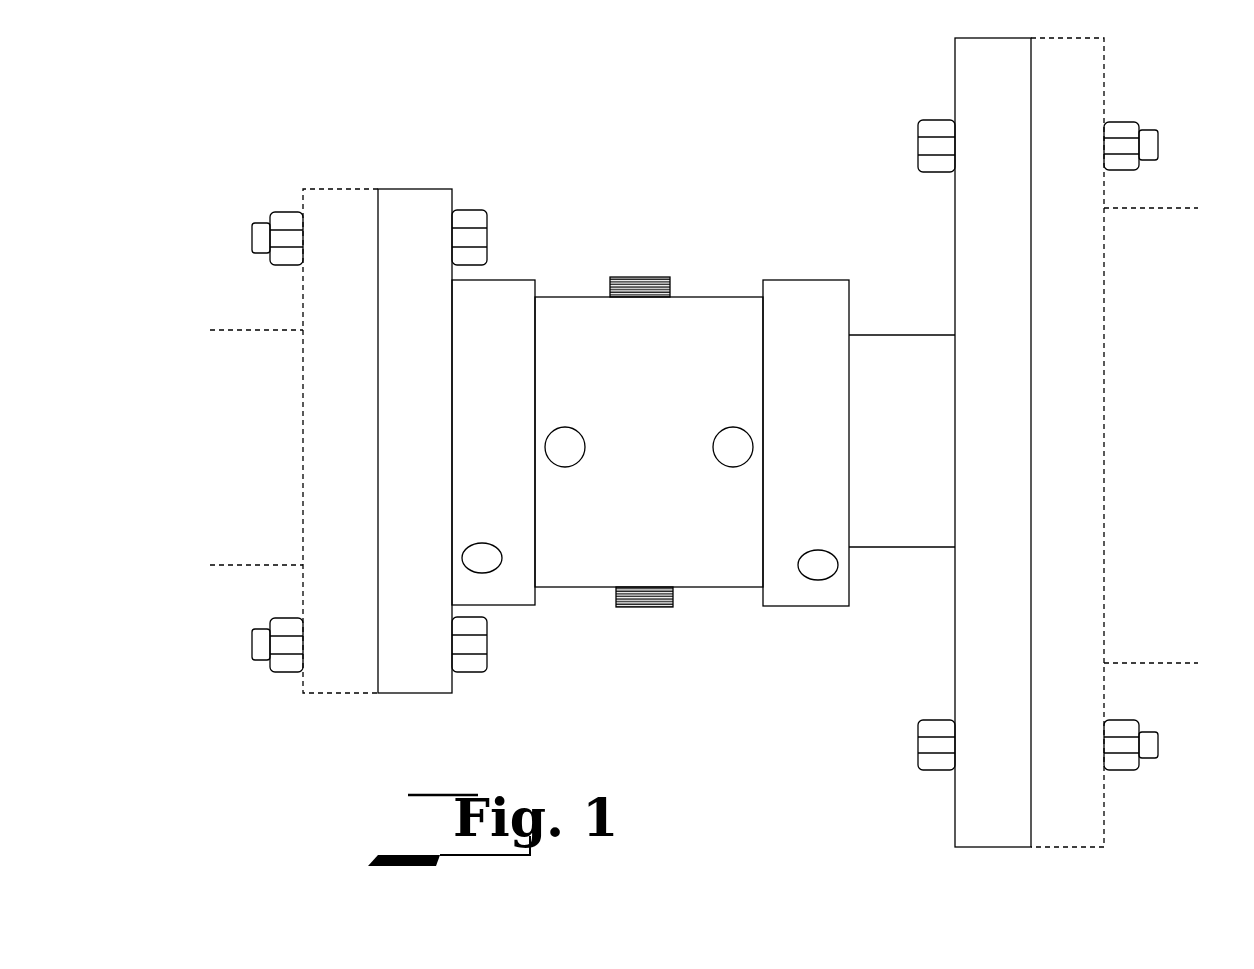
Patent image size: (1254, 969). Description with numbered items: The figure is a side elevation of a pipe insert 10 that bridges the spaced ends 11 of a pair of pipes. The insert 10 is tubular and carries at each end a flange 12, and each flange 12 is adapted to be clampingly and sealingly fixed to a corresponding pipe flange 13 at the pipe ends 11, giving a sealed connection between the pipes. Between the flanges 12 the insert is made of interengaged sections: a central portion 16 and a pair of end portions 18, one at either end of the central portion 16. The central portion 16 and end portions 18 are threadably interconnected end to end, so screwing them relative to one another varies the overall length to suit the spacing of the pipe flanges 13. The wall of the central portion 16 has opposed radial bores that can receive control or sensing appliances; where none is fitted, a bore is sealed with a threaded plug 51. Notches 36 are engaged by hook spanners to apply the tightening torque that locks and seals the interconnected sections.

The pipe insert 10 is at (737, 193).
The pipe ends 11 is at (333, 705).
The flanges 12 is at (413, 222).
The pipe flanges 13 is at (318, 582).
The central portion 16 is at (702, 548).
The end portions 18 is at (892, 357).
The notches 36 is at (565, 437).
The threaded plug 51 is at (640, 296).